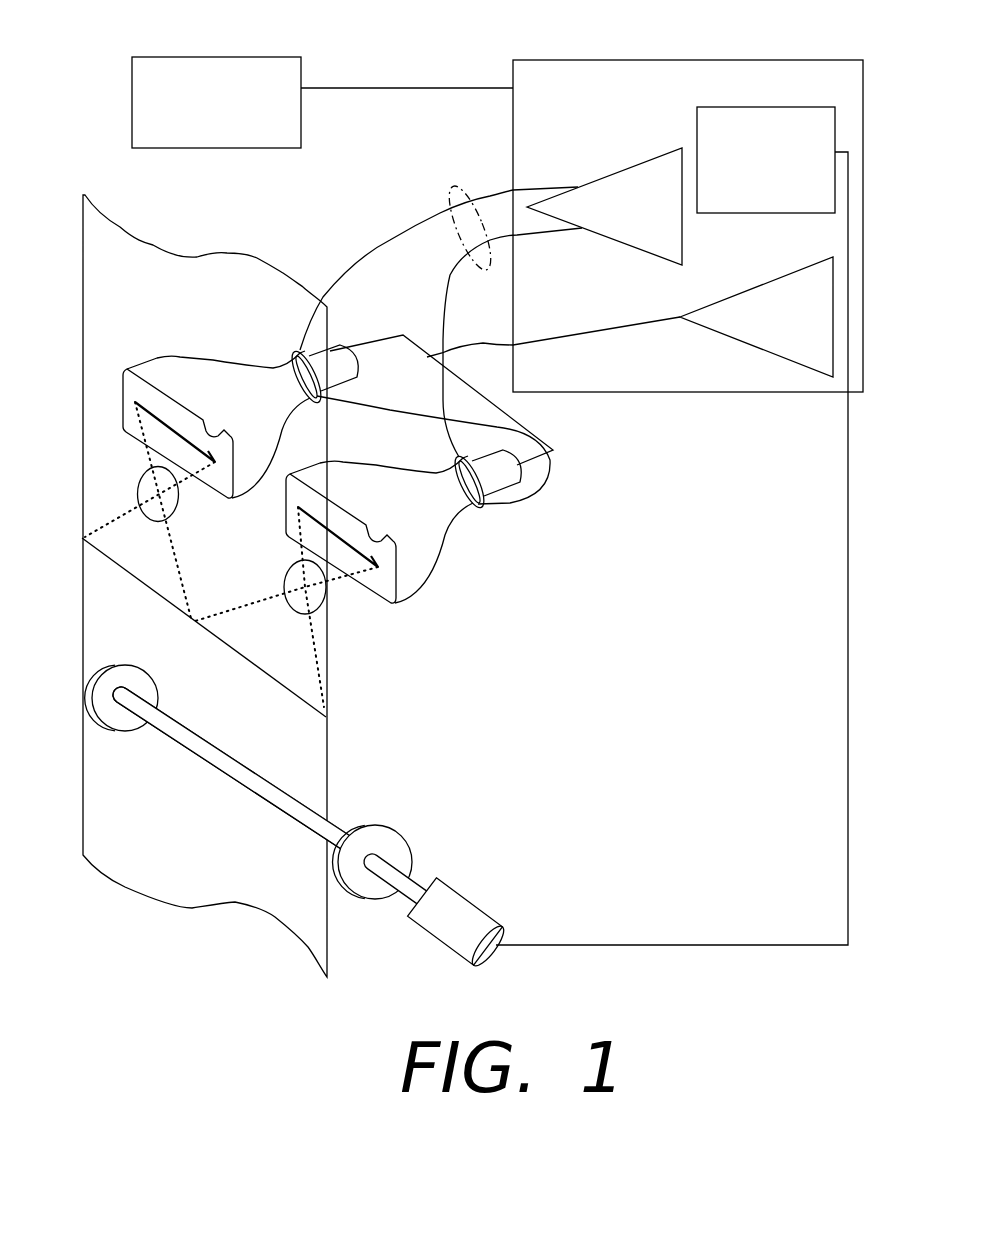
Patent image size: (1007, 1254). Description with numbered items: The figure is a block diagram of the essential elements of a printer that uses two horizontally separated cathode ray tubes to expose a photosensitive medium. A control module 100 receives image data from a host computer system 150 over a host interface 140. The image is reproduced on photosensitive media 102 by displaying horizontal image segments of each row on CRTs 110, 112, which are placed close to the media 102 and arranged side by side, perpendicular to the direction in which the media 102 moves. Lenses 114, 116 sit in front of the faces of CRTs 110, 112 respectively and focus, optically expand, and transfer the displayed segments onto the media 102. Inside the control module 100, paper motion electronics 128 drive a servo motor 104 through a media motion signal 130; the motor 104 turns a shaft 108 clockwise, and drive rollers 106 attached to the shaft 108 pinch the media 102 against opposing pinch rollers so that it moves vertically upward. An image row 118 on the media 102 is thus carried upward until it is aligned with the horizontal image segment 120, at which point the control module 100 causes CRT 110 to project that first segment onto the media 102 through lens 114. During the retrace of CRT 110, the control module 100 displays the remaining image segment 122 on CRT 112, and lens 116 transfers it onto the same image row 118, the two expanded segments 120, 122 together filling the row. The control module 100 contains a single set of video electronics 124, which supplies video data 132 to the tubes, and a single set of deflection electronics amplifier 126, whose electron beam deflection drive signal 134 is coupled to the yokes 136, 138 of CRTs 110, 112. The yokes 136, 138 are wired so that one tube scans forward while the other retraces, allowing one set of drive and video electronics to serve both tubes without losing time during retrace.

The control module 100 is at (645, 252).
The photosensitive media 102 is at (326, 760).
The servo motor 104 is at (482, 868).
The drive rollers 106 is at (125, 731).
The shaft 108 is at (203, 737).
The CRT 110 is at (240, 421).
The CRT 112 is at (403, 526).
The lens 114 is at (178, 497).
The lens 116 is at (285, 582).
The image row 118 is at (192, 622).
The horizontal image segment 120 is at (193, 397).
The image segment 122 is at (332, 497).
The video electronics 124 is at (740, 292).
The deflection electronics amplifier 126 is at (597, 180).
The paper motion electronics 128 is at (697, 118).
The media motion signal 130 is at (848, 525).
The video data 132 is at (647, 327).
The electron beam deflection drive signal 134 is at (455, 212).
The yoke 136 is at (297, 353).
The yoke 138 is at (480, 512).
The host interface 140 is at (450, 70).
The host computer system 150 is at (245, 57).